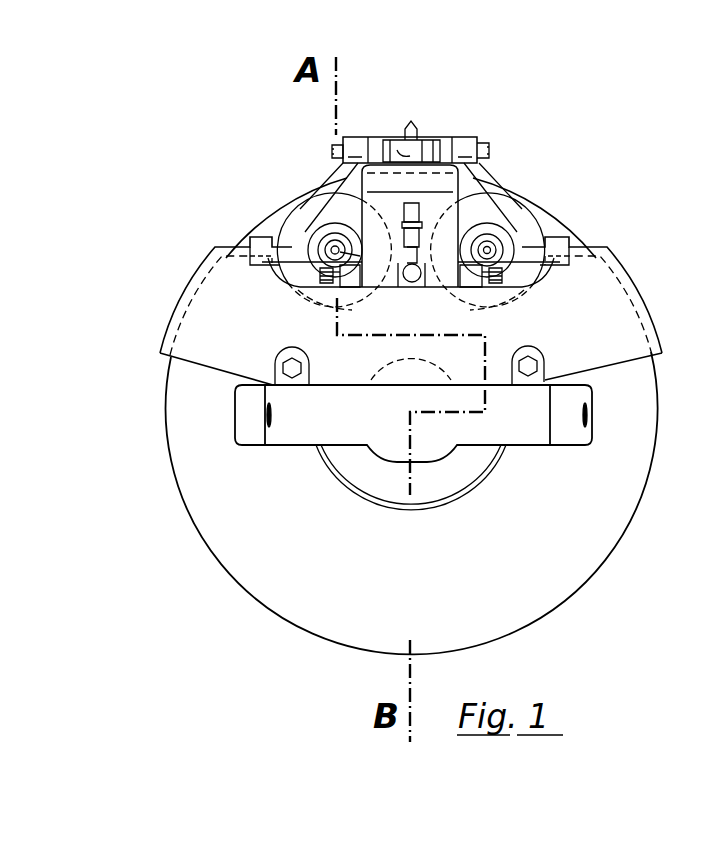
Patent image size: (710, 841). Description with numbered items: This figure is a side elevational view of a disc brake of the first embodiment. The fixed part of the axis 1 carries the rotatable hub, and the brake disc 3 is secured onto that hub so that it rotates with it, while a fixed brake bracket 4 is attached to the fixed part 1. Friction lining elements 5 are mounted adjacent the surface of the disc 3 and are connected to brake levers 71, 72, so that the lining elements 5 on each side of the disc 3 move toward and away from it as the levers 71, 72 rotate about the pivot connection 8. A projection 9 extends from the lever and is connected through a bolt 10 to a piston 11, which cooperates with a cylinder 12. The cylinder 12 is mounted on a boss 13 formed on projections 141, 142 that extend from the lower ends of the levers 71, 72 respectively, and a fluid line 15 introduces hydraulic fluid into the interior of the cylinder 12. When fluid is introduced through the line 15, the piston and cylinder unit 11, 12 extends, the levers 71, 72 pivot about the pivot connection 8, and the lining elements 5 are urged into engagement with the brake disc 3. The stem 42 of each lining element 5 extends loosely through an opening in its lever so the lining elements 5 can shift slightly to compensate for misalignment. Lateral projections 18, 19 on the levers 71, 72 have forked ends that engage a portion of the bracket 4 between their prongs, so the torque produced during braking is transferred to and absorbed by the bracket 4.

The fixed part of the axis 1 is at (340, 423).
The brake disc 3 is at (555, 543).
The fixed brake bracket 4 is at (233, 288).
The friction lining elements 5 is at (302, 215).
The brake lever 71 is at (325, 176).
The brake lever 72 is at (470, 185).
The pivot connection 8 is at (481, 141).
The projection 9 is at (403, 152).
The bolt 10 is at (445, 150).
The piston 11 is at (428, 150).
The cylinder 12 is at (383, 203).
The boss 13 is at (378, 268).
The projection 141 is at (352, 268).
The projection 142 is at (470, 268).
The fluid line 15 is at (416, 214).
The lateral projection 18 is at (260, 242).
The lateral projection 19 is at (552, 246).
The stem 42 is at (345, 250).